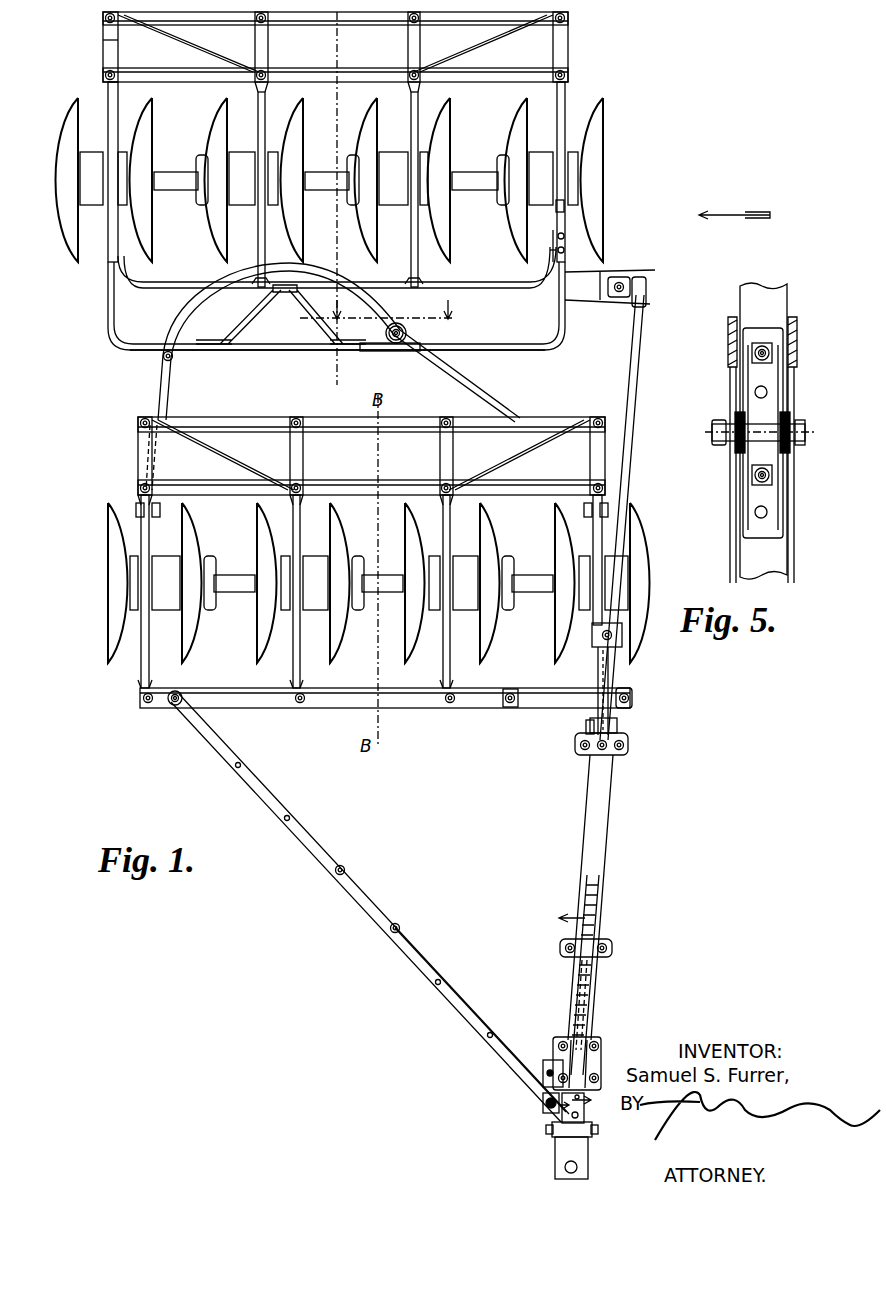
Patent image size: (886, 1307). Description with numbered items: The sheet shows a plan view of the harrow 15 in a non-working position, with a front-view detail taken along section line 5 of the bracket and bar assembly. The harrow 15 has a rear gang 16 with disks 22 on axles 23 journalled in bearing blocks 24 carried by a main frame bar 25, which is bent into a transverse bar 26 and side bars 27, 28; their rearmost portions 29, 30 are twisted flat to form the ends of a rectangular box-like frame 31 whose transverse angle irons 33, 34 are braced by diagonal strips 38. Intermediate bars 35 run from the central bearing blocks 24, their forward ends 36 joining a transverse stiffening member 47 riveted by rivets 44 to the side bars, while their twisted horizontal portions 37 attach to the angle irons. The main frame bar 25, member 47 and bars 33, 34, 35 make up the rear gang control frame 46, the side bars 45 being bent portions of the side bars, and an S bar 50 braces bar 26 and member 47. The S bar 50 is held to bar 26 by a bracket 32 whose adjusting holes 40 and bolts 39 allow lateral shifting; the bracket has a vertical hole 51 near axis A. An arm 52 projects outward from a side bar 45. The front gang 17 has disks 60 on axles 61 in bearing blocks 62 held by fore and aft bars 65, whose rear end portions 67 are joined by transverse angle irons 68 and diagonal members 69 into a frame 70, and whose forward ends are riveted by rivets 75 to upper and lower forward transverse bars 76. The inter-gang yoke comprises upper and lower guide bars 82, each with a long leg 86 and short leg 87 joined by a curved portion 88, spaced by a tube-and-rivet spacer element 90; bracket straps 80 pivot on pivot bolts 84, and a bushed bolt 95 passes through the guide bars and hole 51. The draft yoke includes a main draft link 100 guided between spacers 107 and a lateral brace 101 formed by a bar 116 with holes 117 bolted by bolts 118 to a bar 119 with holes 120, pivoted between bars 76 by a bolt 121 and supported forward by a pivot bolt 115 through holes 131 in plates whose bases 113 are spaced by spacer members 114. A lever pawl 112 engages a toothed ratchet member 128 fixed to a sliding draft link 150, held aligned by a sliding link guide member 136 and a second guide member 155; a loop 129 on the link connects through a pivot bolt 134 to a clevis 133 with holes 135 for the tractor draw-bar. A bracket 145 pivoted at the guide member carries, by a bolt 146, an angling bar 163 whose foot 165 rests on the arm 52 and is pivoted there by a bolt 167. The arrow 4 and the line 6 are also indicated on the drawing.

In FIG. 1, the direction of travel arrow 4 is at (748, 216).
In FIG. 1, the section line 5— 5 is at (381, 306).
In FIG. 1, the section line 6- 6 is at (590, 1016).
In FIG. 1, the harrow 15 is at (401, 204).
In FIG. 1, the rear gang 16 is at (369, 47).
In FIG. 1, the front gang 17 is at (411, 595).
In FIG. 1, the disks 22 is at (75, 122).
In FIG. 1, the axles 23 is at (182, 192).
In FIG. 1, the bearing blocks 24 is at (100, 150).
In FIG. 1, the main frame bar 25 is at (580, 216).
In FIG. 1, the transverse bar 26 is at (498, 348).
In FIG. 1, the side bar 27 is at (566, 232).
In FIG. 1, the side bar 28 is at (106, 245).
In FIG. 1, the rearmost portion of side bar 29 is at (568, 46).
In FIG. 1, the rearmost portion of side bar 30 is at (103, 58).
In FIG. 1, the rectangular box-like frame 31 is at (94, 42).
In FIG. 1, the bracket 32 is at (380, 351).
In FIG. 5, the bracket 32 is at (746, 536).
In FIG. 1, the transverse angle iron 33 is at (293, 77).
In FIG. 1, the transverse angle iron 34 is at (384, 24).
In FIG. 1, the intermediate bars 35 is at (252, 142).
In FIG. 1, the forward ends of intermediate bars 36 is at (240, 268).
In FIG. 1, the horizontal portions 37 is at (255, 38).
In FIG. 1, the diagonal strips 38 is at (172, 48).
In FIG. 1, the bolts 39 is at (351, 398).
In FIG. 5, the bolts 39 is at (752, 356).
In FIG. 5, the adjusting holes 40 is at (754, 393).
In FIG. 1, the rivets 44 is at (550, 258).
In FIG. 1, the side bars 45 is at (108, 322).
In FIG. 1, the rear gang control frame 46 is at (578, 266).
In FIG. 1, the transverse stiffening member 47 is at (530, 288).
In FIG. 1, the S bar 50 is at (312, 320).
In FIG. 1, the vertical hole 51 is at (403, 326).
In FIG. 1, the arm 52 is at (598, 300).
In FIG. 1, the disks 60 is at (106, 642).
In FIG. 1, the axles 61 is at (232, 578).
In FIG. 1, the bearing blocks 62 is at (180, 552).
In FIG. 1, the fore and aft bars 65 is at (290, 680).
In FIG. 1, the rear end portions 67 is at (138, 460).
In FIG. 1, the transverse angle irons 68 is at (410, 466).
In FIG. 1, the diagonal members 69 is at (280, 470).
In FIG. 1, the frame 70 is at (379, 468).
In FIG. 1, the rivets 75 is at (138, 713).
In FIG. 1, the forward transverse bars 76 is at (412, 710).
In FIG. 1, the bracket straps 80 is at (136, 496).
In FIG. 1, the guide bars 82 is at (181, 312).
In FIG. 1, the pivot bolts 84 is at (140, 508).
In FIG. 1, the long leg 86 is at (490, 392).
In FIG. 1, the short leg 87 is at (176, 379).
In FIG. 1, the curved portion 88 is at (216, 282).
In FIG. 1, the tube-and-rivet spacer element 90 is at (160, 362).
In FIG. 1, the bolt 95 is at (392, 322).
In FIG. 5, the bolt 95 is at (718, 440).
In FIG. 1, the main draft link 100 is at (620, 680).
In FIG. 1, the lateral brace 101 is at (370, 908).
In FIG. 1, the tube and bolt spacers 107 is at (512, 708).
In FIG. 1, the lever pawl 112 is at (594, 984).
In FIG. 1, the bases 113 is at (560, 1056).
In FIG. 1, the tube and bolt spacer members 114 is at (592, 1042).
In FIG. 1, the pivot bolt 115 is at (542, 1104).
In FIG. 1, the bar 116 is at (482, 1006).
In FIG. 1, the holes 117 is at (486, 1038).
In FIG. 1, the bolts 118 is at (398, 926).
In FIG. 1, the bar 119 is at (308, 830).
In FIG. 1, the holes 120 is at (290, 816).
In FIG. 1, the bolt 121 is at (170, 712).
In FIG. 1, the toothed ratchet member 128 is at (602, 896).
In FIG. 1, the loop 129 is at (562, 1114).
In FIG. 1, the holes 131 is at (546, 1074).
In FIG. 1, the clevis 133 is at (555, 1154).
In FIG. 1, the pivot bolt 134 is at (552, 1128).
In FIG. 1, the holes 135 is at (565, 1168).
In FIG. 1, the sliding link guide member 136 is at (622, 954).
In FIG. 1, the bracket 145 is at (586, 726).
In FIG. 1, the bolt 146 is at (618, 728).
In FIG. 1, the sliding draft link 150 is at (612, 836).
In FIG. 1, the second guide member 155 is at (636, 762).
In FIG. 1, the angling bar 163 is at (636, 404).
In FIG. 1, the foot 165 is at (647, 296).
In FIG. 1, the bolt 167 is at (632, 284).